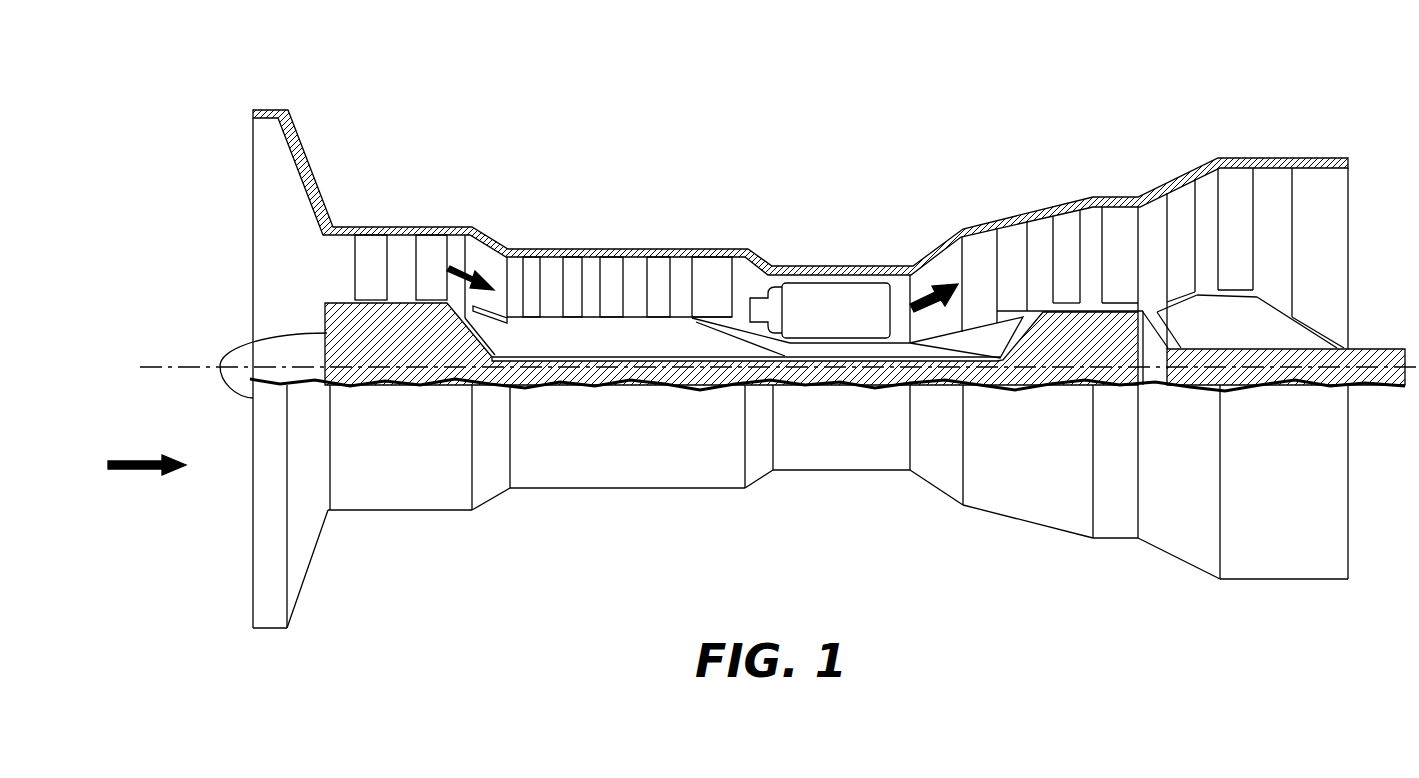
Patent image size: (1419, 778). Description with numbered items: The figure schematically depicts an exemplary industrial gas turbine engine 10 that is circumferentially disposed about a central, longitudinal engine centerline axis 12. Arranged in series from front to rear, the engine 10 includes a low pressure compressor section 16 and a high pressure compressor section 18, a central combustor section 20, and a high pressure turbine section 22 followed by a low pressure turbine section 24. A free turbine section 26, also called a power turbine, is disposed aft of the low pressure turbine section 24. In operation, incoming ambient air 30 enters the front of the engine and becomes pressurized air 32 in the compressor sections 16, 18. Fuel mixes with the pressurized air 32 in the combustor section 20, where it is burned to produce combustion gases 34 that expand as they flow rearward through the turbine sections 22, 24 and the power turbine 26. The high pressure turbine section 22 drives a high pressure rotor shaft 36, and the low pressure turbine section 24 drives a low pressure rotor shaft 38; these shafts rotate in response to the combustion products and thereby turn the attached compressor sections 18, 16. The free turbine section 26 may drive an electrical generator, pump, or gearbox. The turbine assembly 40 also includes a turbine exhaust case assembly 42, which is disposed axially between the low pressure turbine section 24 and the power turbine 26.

The industrial gas turbine engine 10 is at (800, 325).
The engine centerline axis 12 is at (187, 366).
The low pressure compressor section 16 is at (392, 206).
The high pressure compressor section 18 is at (649, 218).
The combustor section 20 is at (812, 306).
The high pressure turbine section 22 is at (1010, 190).
The low pressure turbine section 24 is at (1100, 178).
The free turbine section 26 is at (1294, 146).
The incoming ambient air 30 is at (147, 458).
The pressurized air 32 is at (478, 277).
The combustion gases 34 is at (921, 296).
The high pressure rotor shaft 36 is at (722, 338).
The low pressure rotor shaft 38 is at (489, 341).
The turbine assembly 40 is at (1167, 165).
The turbine exhaust case assembly 42 is at (1092, 545).